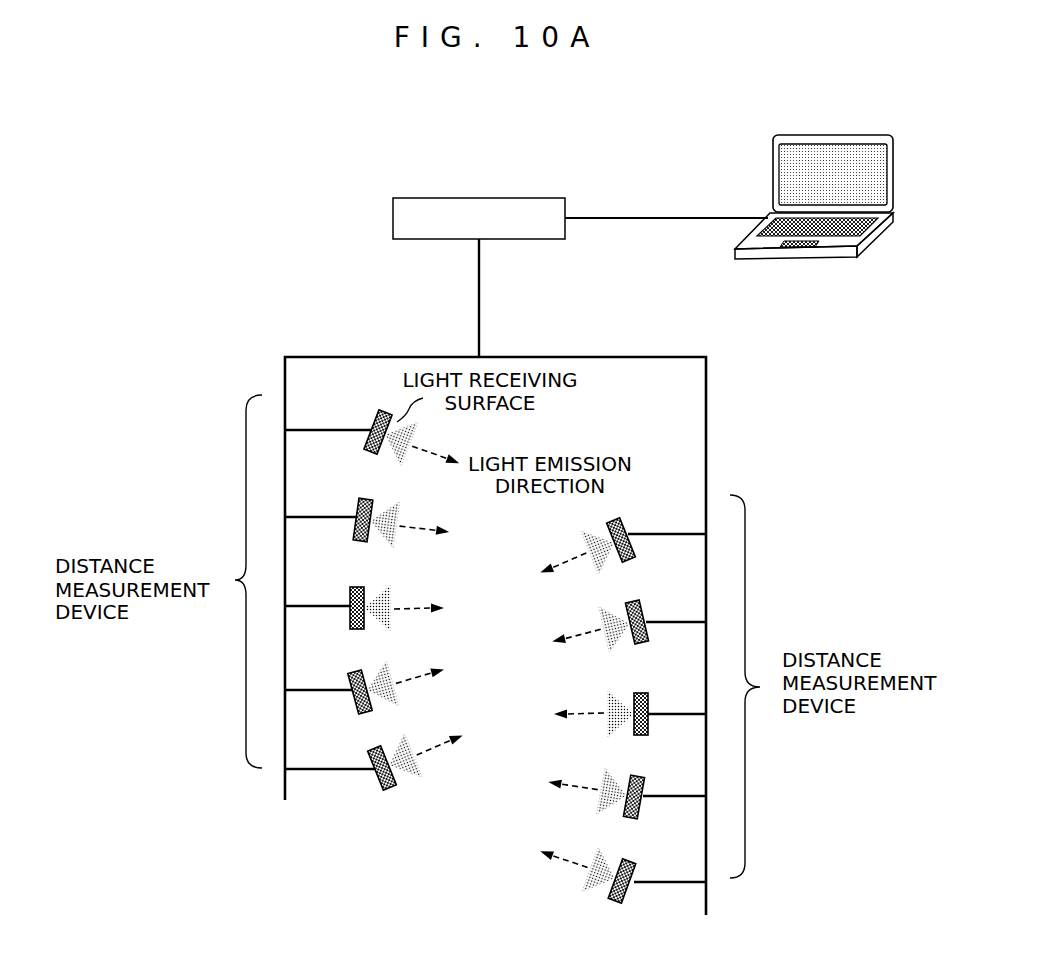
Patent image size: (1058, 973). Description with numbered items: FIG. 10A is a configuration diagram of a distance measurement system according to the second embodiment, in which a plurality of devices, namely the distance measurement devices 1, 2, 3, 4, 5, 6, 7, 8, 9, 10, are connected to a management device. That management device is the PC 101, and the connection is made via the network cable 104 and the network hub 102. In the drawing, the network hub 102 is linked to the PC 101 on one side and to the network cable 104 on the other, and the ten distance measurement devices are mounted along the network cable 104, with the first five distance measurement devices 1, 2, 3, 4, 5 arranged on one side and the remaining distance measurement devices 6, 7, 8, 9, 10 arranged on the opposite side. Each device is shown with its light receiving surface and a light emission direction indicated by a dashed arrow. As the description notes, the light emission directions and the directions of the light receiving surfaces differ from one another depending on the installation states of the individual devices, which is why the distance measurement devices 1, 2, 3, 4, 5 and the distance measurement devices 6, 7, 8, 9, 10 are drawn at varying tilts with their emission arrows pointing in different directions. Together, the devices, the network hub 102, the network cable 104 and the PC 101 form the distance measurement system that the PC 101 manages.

The distance measurement device 1 is at (371, 422).
The distance measurement device 2 is at (355, 512).
The distance measurement device 3 is at (348, 602).
The distance measurement device 4 is at (347, 682).
The distance measurement device 5 is at (368, 762).
The distance measurement device 6 is at (625, 525).
The distance measurement device 7 is at (645, 612).
The distance measurement device 8 is at (650, 703).
The distance measurement device 9 is at (645, 785).
The distance measurement device 10 is at (643, 870).
The PC 101 is at (815, 135).
The network hub 102 is at (497, 197).
The network cable 104 is at (618, 356).